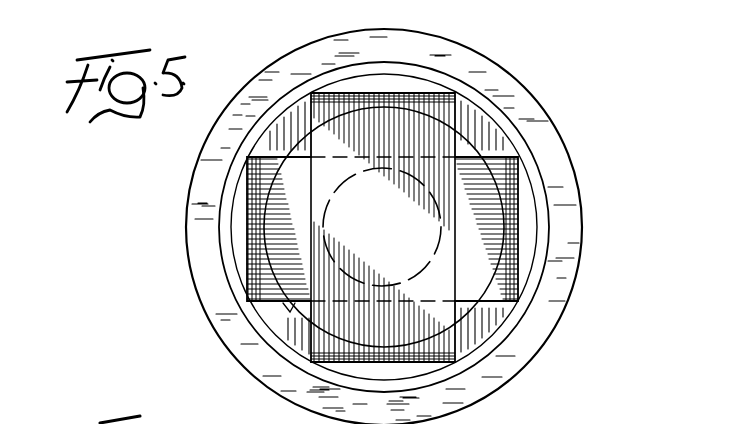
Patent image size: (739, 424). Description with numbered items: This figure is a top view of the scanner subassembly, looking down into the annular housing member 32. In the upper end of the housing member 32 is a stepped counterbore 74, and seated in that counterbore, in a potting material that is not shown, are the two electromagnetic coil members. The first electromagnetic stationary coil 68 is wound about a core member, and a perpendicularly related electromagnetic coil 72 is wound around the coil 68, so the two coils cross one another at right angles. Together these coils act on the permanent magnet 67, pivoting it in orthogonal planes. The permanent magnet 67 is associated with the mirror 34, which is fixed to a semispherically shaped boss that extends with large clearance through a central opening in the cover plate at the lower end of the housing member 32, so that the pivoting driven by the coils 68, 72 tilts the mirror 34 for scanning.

The housing member 32 is at (217, 145).
The mirror 34 is at (470, 127).
The permanent magnet 67 is at (312, 318).
The first electromagnetic stationary coil 68 is at (500, 178).
The electromagnetic coil 72 is at (413, 107).
The stepped counterbore 74 is at (230, 209).